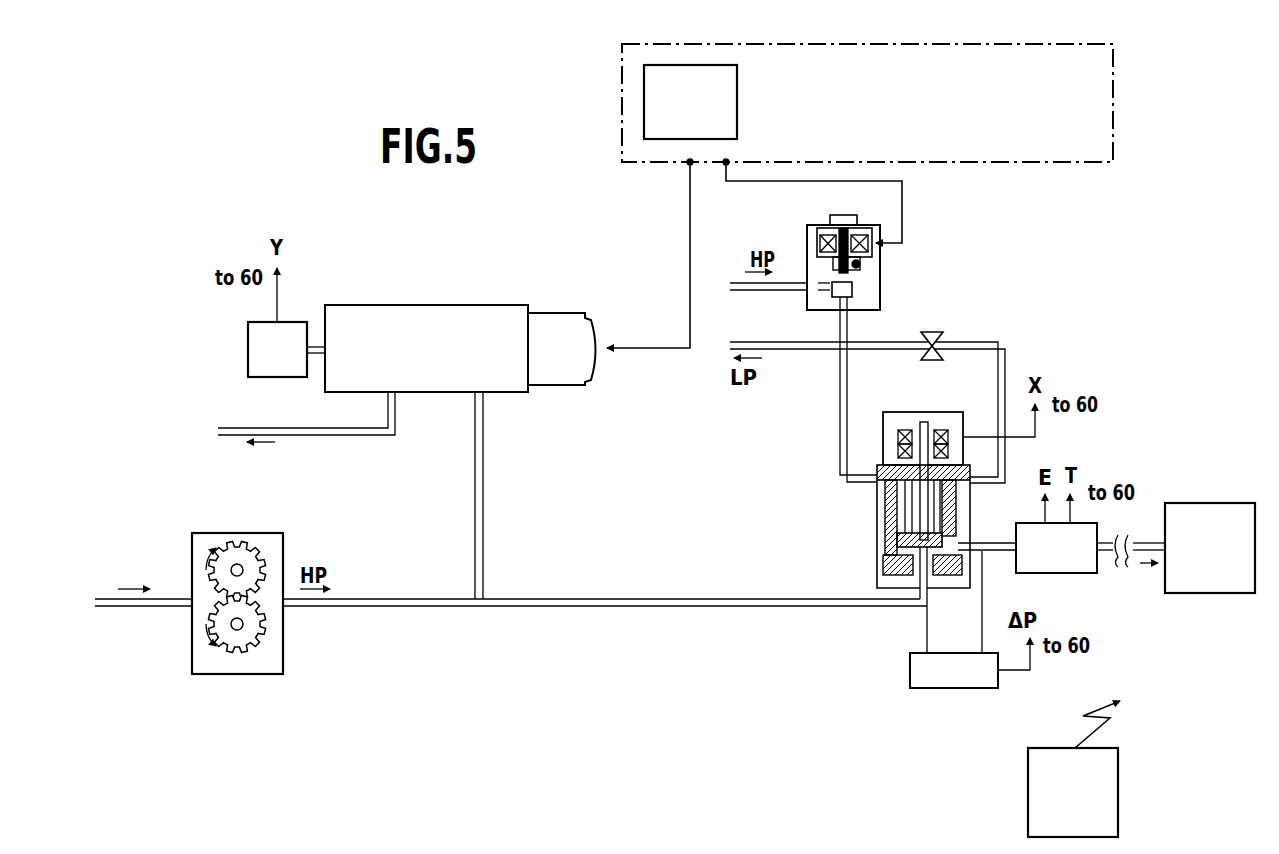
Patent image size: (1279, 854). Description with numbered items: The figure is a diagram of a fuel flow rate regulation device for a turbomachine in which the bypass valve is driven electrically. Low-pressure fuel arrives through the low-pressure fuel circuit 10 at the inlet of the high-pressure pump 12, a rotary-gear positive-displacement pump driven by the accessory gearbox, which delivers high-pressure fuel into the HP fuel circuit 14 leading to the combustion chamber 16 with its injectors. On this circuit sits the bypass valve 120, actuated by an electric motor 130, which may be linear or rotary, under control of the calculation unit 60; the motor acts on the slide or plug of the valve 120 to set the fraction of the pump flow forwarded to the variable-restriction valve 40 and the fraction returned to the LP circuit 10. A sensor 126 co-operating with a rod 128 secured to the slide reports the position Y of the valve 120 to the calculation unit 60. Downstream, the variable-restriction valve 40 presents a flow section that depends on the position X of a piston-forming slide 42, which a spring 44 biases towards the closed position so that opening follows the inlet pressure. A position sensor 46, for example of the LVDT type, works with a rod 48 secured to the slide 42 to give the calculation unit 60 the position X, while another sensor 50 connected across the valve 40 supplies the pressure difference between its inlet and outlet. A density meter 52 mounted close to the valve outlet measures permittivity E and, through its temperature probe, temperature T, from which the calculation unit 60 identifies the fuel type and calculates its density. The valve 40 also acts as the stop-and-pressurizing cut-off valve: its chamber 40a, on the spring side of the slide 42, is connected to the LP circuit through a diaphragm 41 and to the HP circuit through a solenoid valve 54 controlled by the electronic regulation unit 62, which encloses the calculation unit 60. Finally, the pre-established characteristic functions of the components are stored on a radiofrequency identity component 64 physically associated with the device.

The low-pressure fuel circuit 10 is at (127, 607).
The high-pressure pump 12 is at (233, 668).
The HP fuel circuit 14 is at (651, 620).
The combustion chamber 16 is at (1219, 561).
The variable-restriction valve 40 is at (862, 570).
The chamber 40a is at (940, 505).
The diaphragm 41 is at (937, 330).
The slide 42 is at (900, 555).
The spring 44 is at (900, 533).
The position sensor 46 is at (888, 432).
The rod 48 is at (886, 508).
The sensor 50 is at (964, 681).
The density meter 52 is at (1066, 559).
The solenoid valve 54 is at (880, 275).
The calculation unit 60 is at (701, 110).
The electronic regulation unit 62 is at (938, 110).
The radiofrequency identity component 64 is at (1083, 809).
The valve 120 is at (427, 333).
The sensor 126 is at (272, 348).
The rod 128 is at (314, 340).
The electric motor 130 is at (561, 335).